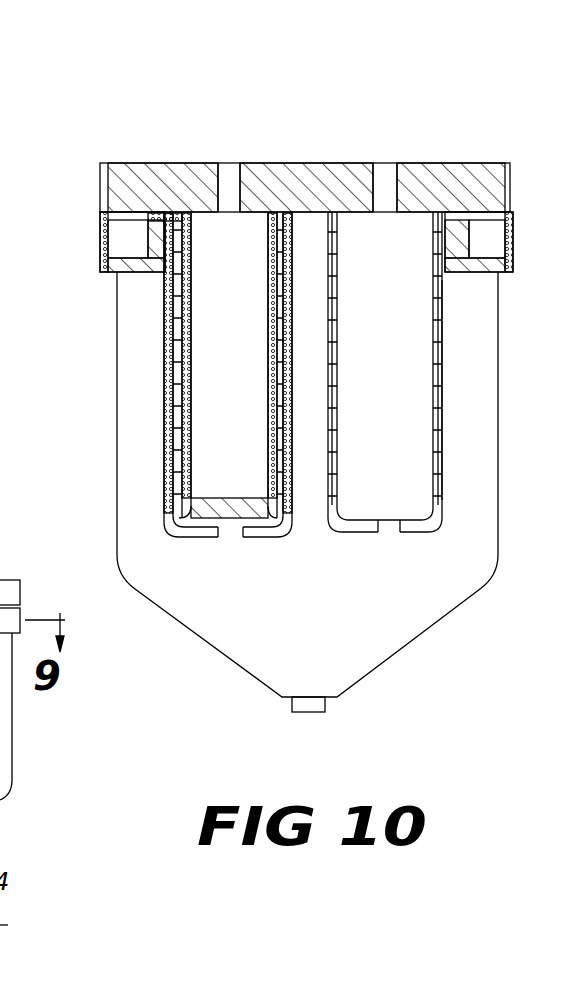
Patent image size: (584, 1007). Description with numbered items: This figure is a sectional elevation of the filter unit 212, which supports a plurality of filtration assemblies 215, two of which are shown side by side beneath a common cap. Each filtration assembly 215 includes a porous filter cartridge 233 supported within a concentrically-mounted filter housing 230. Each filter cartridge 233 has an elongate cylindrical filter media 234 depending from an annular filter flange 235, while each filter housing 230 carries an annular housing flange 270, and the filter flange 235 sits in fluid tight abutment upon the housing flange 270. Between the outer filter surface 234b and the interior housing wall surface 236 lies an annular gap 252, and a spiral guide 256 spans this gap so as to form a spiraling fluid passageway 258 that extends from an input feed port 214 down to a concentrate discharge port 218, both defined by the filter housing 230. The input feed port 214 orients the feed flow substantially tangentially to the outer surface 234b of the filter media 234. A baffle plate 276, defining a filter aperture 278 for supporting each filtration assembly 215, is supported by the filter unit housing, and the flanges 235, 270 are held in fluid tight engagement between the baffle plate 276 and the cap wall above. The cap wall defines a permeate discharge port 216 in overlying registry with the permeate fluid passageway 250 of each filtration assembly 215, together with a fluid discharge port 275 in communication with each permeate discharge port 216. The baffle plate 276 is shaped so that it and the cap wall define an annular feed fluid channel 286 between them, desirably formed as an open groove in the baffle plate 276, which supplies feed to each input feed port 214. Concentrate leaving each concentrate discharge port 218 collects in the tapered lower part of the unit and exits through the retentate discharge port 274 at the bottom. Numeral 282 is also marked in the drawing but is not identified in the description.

The filter unit 212 is at (59, 153).
The fluid discharge port 275 is at (228, 161).
The filter aperture 278 is at (323, 163).
The filter flange 235 is at (148, 218).
The housing flange 270 is at (160, 218).
The baffle plate 276 is at (98, 263).
The annular feed fluid channel 286 is at (488, 244).
The permeate discharge port 216 is at (221, 222).
The bottom disc 282 is at (320, 286).
The input feed port 214 is at (431, 292).
The annular gap 252 is at (167, 300).
The spiraling fluid passageway 258 is at (441, 345).
The permeate fluid passageway 250 is at (256, 365).
The filter housing 230 is at (168, 388).
The filter media 234 is at (190, 388).
The interior housing wall surface 236 is at (443, 405).
The spiral guide 256 is at (168, 425).
The outer filter surface 234b is at (447, 441).
The filter cartridge 233 is at (172, 524).
The concentrate discharge port 218 is at (228, 539).
The filtration assembly 215 is at (280, 557).
The retentate discharge port 274 is at (311, 724).